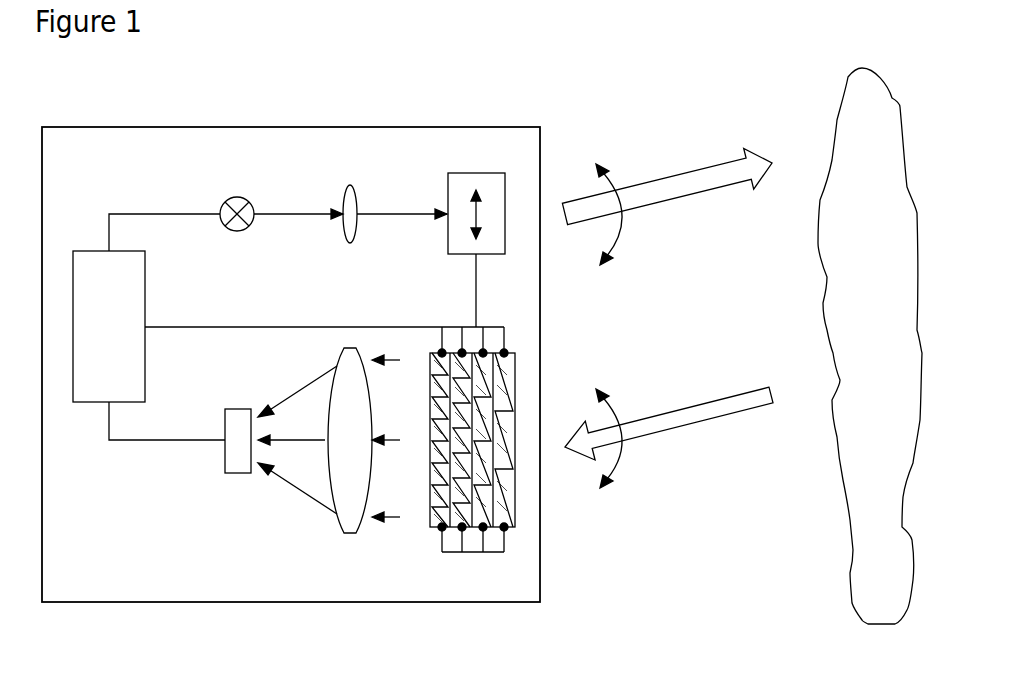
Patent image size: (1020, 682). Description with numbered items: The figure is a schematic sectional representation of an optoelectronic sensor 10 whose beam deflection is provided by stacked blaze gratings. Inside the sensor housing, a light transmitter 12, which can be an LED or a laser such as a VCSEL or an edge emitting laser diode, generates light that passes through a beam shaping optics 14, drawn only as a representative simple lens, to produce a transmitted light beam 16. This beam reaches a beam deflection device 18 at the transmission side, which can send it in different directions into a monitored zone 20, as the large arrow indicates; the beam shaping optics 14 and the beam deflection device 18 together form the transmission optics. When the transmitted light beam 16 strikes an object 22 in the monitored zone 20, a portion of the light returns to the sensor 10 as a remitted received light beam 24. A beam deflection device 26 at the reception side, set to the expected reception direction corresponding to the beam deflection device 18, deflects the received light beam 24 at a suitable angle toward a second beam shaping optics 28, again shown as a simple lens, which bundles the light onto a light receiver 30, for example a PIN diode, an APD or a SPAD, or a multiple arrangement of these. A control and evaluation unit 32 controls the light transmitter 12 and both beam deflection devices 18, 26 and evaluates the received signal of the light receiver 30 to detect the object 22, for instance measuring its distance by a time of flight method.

The optoelectronic sensor 10 is at (291, 320).
The light transmitter 12 is at (232, 202).
The beam shaping optics 14 is at (347, 188).
The transmitted light beam 16 is at (683, 185).
The beam deflection device at the transmission side 18 is at (474, 175).
The monitored zone 20 is at (757, 92).
The object 22 is at (866, 97).
The remitted received light beam 24 is at (670, 423).
The beam deflection device at the reception side 26 is at (425, 520).
The beam shaping optics 28 is at (353, 503).
The light receiver 30 is at (235, 463).
The control and evaluation unit 32 is at (90, 262).